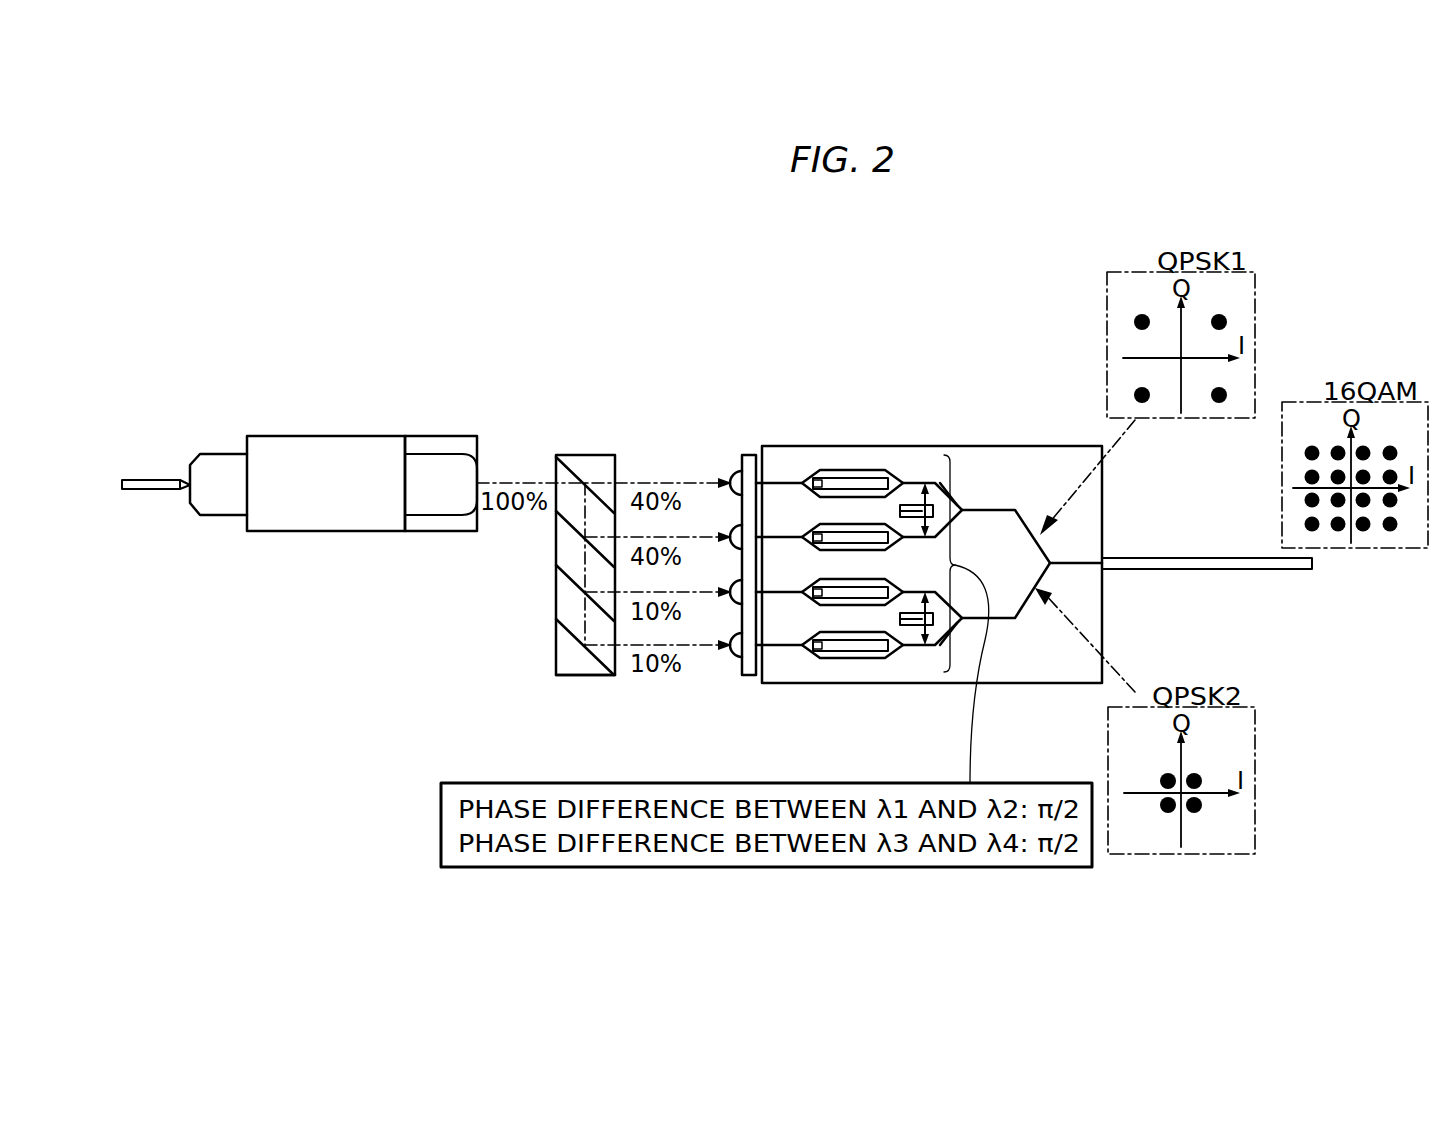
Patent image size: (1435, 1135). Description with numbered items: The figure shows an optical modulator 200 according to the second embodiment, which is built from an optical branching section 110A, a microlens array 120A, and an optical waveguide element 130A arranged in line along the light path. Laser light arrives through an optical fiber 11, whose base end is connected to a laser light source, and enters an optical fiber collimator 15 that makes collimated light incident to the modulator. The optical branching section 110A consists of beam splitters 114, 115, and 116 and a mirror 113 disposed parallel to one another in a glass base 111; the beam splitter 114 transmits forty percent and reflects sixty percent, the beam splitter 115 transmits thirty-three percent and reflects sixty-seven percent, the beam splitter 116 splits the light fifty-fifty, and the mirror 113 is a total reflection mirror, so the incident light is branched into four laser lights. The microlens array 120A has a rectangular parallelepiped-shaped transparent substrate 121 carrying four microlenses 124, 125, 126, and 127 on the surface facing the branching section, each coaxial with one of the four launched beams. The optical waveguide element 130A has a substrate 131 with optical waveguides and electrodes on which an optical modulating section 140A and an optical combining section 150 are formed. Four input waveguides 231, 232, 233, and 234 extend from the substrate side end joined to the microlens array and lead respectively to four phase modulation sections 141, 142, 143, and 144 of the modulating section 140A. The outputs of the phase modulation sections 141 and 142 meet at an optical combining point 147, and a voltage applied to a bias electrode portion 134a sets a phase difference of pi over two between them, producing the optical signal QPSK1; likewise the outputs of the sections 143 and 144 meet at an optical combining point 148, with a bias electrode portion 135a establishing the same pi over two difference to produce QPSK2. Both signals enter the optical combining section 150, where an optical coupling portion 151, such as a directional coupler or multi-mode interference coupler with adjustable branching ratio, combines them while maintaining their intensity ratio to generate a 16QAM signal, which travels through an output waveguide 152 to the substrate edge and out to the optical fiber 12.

The optical fiber 11 is at (140, 484).
The optical fiber collimator 15 is at (332, 425).
The optical modulator 200 is at (953, 270).
The optical branching section 110A is at (596, 440).
The beam splitter 114 is at (566, 465).
The beam splitter 115 is at (570, 522).
The beam splitter 116 is at (570, 575).
The mirror 113 is at (570, 628).
The glass base 111 is at (597, 676).
The microlens array 120A is at (730, 440).
The transparent substrate 121 is at (751, 676).
The microlens 124 is at (735, 470).
The microlens 125 is at (735, 533).
The microlens 126 is at (735, 598).
The microlens 127 is at (736, 654).
The optical waveguide element 130A is at (1048, 313).
The substrate 131 is at (1082, 684).
The input waveguide 231 is at (777, 482).
The input waveguide 232 is at (796, 539).
The input waveguide 233 is at (796, 594).
The input waveguide 234 is at (783, 648).
The optical modulating section 140A is at (938, 353).
The phase modulation section 141 is at (868, 470).
The phase modulation section 142 is at (822, 524).
The phase modulation section 143 is at (838, 580).
The phase modulation section 144 is at (822, 632).
The bias electrode portion 134a is at (900, 510).
The bias electrode portion 135a is at (900, 620).
The optical combining section 150 is at (1093, 353).
The optical coupling portion 151 is at (1050, 555).
The output waveguide 152 is at (1085, 562).
The optical combining point 147 is at (966, 508).
The optical combining point 148 is at (962, 620).
The optical fiber 12 is at (1278, 570).